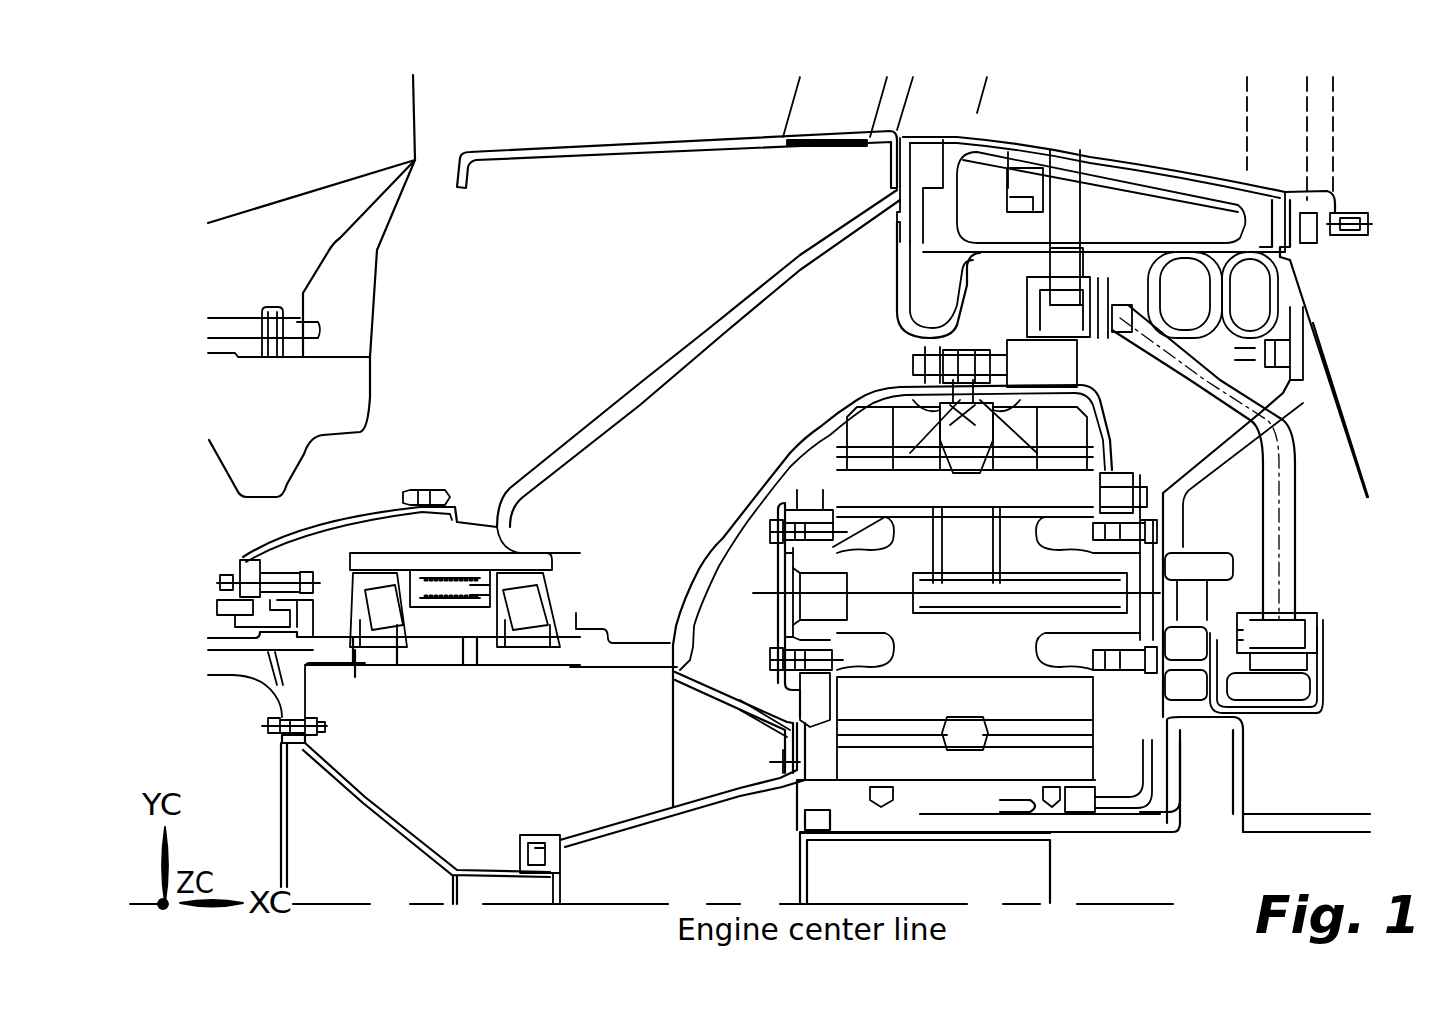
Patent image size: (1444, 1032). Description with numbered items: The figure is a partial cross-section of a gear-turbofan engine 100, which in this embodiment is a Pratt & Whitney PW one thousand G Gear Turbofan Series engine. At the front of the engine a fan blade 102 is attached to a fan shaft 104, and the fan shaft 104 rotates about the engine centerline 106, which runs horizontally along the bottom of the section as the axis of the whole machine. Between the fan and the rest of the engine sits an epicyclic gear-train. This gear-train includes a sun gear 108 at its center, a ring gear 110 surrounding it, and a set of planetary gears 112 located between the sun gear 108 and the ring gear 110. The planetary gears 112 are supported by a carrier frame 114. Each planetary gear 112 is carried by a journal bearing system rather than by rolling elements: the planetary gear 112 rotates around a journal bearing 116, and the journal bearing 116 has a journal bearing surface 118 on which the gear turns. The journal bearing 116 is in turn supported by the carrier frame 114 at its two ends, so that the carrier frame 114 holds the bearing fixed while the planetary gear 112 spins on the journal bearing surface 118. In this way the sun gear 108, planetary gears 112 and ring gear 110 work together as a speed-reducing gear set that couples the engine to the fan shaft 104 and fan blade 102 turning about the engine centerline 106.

The gear-turbofan engine 100 is at (1357, 127).
The fan blade 102 is at (307, 157).
The fan shaft 104 is at (230, 673).
The engine centerline 106 is at (330, 907).
The sun gear 108 is at (1067, 775).
The ring gear 110 is at (877, 435).
The planetary gear 112 is at (1053, 703).
The carrier frame 114 is at (1223, 705).
The journal bearing 116 is at (1083, 567).
The journal bearing surface 118 is at (880, 513).